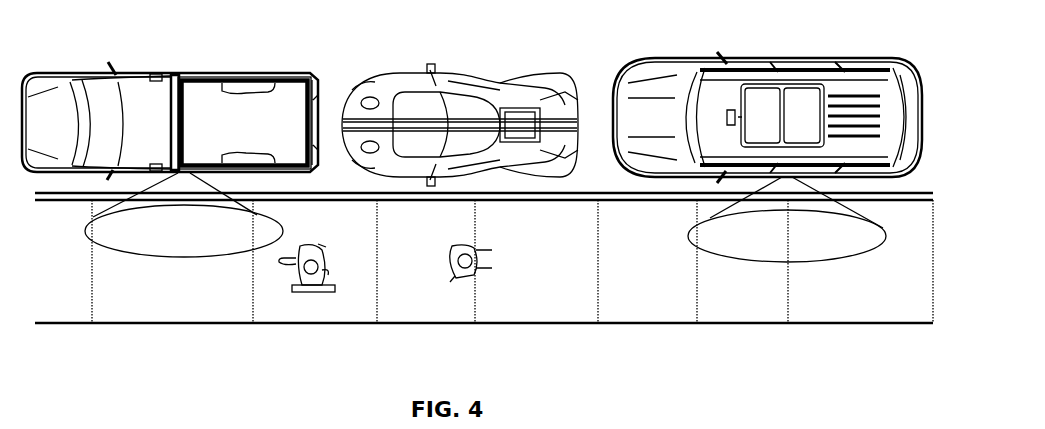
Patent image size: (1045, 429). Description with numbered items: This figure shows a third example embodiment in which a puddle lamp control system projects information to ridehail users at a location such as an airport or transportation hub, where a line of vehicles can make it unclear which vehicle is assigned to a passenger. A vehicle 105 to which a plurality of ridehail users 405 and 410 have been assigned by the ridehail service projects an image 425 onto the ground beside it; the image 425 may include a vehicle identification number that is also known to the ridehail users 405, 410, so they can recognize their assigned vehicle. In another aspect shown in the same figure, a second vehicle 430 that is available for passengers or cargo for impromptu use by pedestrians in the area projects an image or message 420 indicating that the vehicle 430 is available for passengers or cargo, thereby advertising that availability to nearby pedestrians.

The vehicle 105 is at (797, 58).
The ridehail user 405 is at (295, 293).
The ridehail user 410 is at (458, 280).
The information 420 is at (183, 257).
The image 425 is at (767, 260).
The vehicle 430 is at (155, 73).